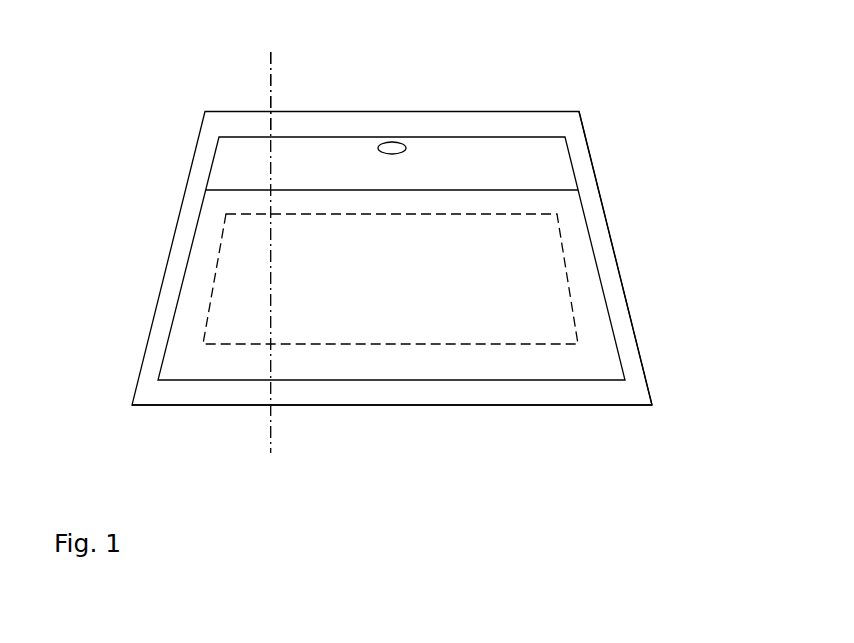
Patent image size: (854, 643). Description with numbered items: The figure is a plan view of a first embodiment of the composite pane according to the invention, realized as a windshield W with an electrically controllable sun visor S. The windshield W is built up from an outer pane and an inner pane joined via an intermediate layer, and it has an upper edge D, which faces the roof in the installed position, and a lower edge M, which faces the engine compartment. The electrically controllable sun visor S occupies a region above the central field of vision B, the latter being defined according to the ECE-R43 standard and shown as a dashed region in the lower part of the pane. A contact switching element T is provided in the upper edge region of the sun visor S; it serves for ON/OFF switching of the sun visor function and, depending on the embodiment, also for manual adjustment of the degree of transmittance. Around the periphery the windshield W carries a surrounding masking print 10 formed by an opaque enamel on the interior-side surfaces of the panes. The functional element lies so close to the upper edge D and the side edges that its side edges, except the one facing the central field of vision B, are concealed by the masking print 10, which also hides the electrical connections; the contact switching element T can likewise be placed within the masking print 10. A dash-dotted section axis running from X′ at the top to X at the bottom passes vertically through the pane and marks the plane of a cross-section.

The masking print 10 is at (598, 237).
The upper edge D is at (488, 109).
The windshield W is at (585, 97).
The electrically controllable sun visor S is at (238, 162).
The contact switching element T is at (392, 142).
The central field of vision B is at (237, 264).
The lower edge M is at (502, 406).
The cross-section axis end X is at (271, 267).
The cross-section axis end X' X′ is at (274, 80).